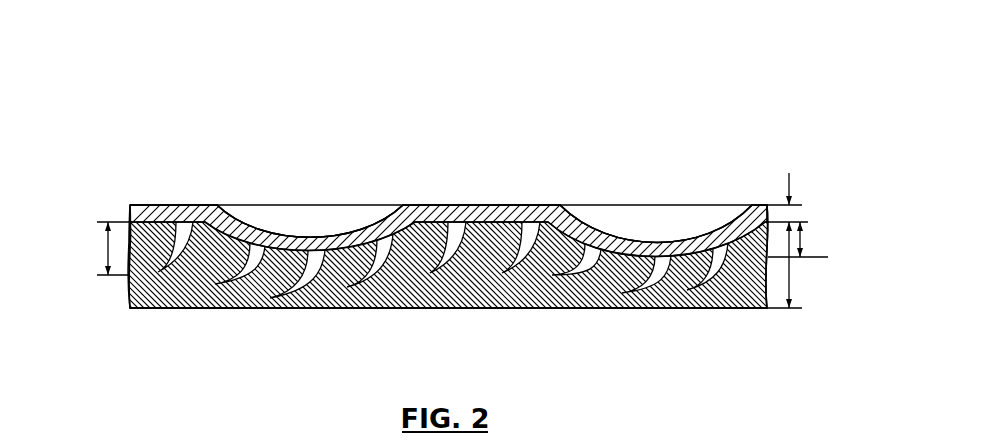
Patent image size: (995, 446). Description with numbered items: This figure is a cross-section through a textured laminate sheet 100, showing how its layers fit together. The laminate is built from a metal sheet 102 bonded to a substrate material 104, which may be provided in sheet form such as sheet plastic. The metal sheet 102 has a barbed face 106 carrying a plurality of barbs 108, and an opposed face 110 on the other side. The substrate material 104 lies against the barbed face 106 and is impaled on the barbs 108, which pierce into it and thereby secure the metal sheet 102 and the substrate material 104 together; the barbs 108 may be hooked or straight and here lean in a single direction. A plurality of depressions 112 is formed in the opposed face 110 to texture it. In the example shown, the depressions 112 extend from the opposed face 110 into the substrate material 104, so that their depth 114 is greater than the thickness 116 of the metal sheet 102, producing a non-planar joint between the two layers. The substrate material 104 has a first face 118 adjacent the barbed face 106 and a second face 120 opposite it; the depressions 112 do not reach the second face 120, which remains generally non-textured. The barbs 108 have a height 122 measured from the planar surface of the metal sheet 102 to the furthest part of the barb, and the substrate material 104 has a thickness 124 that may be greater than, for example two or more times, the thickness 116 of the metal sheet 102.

The textured laminate sheet 100 is at (764, 118).
The metal sheet 102 is at (162, 205).
The substrate material 104 is at (207, 306).
The barbed face 106 is at (445, 222).
The barbs 108 is at (436, 254).
The opposed face 110 is at (517, 204).
The depressions 112 is at (349, 226).
The depth 114 is at (802, 236).
The thickness of the metal sheet 116 is at (792, 178).
The first face 118 is at (130, 232).
The second face 120 is at (153, 308).
The height of the barbs 122 is at (106, 250).
The thickness of the substrate material 124 is at (792, 272).